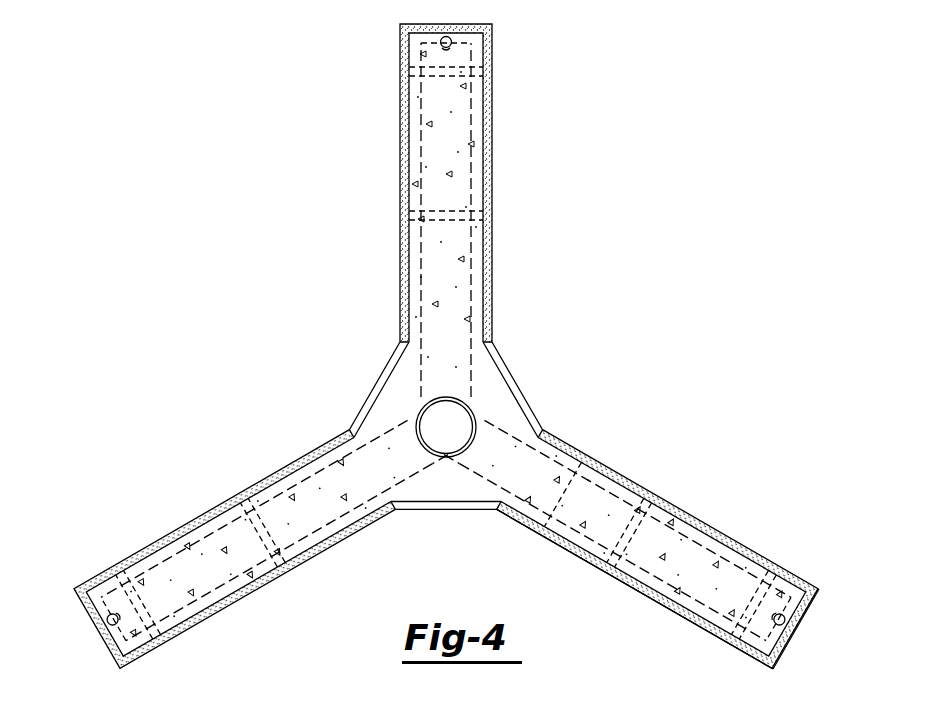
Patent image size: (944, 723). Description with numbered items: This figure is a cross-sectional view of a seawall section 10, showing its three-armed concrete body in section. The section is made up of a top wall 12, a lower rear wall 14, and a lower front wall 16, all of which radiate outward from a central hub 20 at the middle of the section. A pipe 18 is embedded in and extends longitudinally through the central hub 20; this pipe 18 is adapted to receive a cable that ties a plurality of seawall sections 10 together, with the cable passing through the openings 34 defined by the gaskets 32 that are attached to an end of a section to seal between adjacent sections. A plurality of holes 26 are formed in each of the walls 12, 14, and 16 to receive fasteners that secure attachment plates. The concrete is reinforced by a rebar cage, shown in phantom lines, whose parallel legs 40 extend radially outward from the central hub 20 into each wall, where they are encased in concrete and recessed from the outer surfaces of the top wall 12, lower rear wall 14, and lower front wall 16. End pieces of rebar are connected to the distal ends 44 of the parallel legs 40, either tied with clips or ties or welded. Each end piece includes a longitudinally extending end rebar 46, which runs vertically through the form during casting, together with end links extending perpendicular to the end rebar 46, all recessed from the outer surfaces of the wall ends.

The seawall section 10 is at (452, 364).
The top wall 12 is at (453, 151).
The lower rear wall 14 is at (166, 575).
The lower front wall 16 is at (660, 542).
The pipe 18 is at (470, 434).
The central hub 20 is at (503, 393).
The holes 26 is at (461, 225).
The gasket 32 is at (697, 625).
The opening 34 is at (430, 422).
The parallel legs 40 is at (597, 455).
The distal ends 44 is at (783, 643).
The end rebar 46 is at (430, 57).